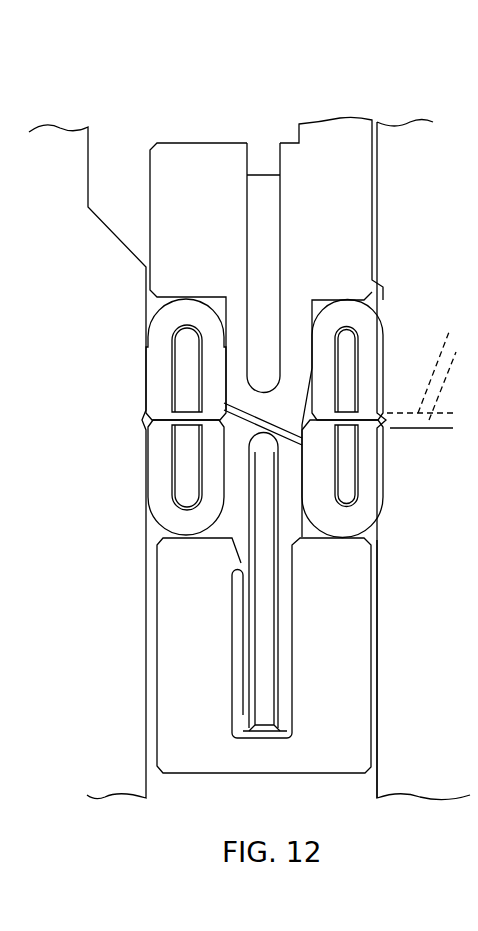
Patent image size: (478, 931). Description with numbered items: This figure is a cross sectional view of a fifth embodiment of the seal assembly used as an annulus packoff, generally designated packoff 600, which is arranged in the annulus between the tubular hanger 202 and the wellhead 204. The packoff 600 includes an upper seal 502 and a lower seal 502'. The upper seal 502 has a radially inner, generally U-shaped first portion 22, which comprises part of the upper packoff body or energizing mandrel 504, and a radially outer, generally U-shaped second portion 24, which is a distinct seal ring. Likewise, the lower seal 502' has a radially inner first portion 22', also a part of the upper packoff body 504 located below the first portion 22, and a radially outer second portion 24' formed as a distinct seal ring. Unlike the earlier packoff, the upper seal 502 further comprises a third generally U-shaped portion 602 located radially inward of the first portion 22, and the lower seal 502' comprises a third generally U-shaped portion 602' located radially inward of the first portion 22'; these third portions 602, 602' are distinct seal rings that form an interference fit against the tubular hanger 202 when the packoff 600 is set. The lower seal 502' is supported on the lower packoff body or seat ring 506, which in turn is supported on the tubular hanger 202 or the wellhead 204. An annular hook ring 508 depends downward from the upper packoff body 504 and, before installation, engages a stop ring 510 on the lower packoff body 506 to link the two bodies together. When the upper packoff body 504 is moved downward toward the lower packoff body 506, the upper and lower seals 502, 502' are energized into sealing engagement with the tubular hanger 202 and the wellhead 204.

The packoff 600 is at (338, 112).
The upper packoff body 504 is at (360, 183).
The upper seal 502 is at (132, 359).
The lower seal 502' is at (130, 477).
The third generally U-shaped portion 602 is at (194, 319).
The third generally U-shaped portion 602' is at (191, 519).
The second portion 24 is at (347, 324).
The second portion 24' is at (342, 516).
The first portion 22 is at (372, 370).
The first portion 22' is at (369, 466).
The tubular hanger 202 is at (134, 770).
The wellhead 204 is at (437, 770).
The lower packoff body 506 is at (354, 727).
The annular hook ring 508 is at (240, 712).
The stop ring 510 is at (236, 572).